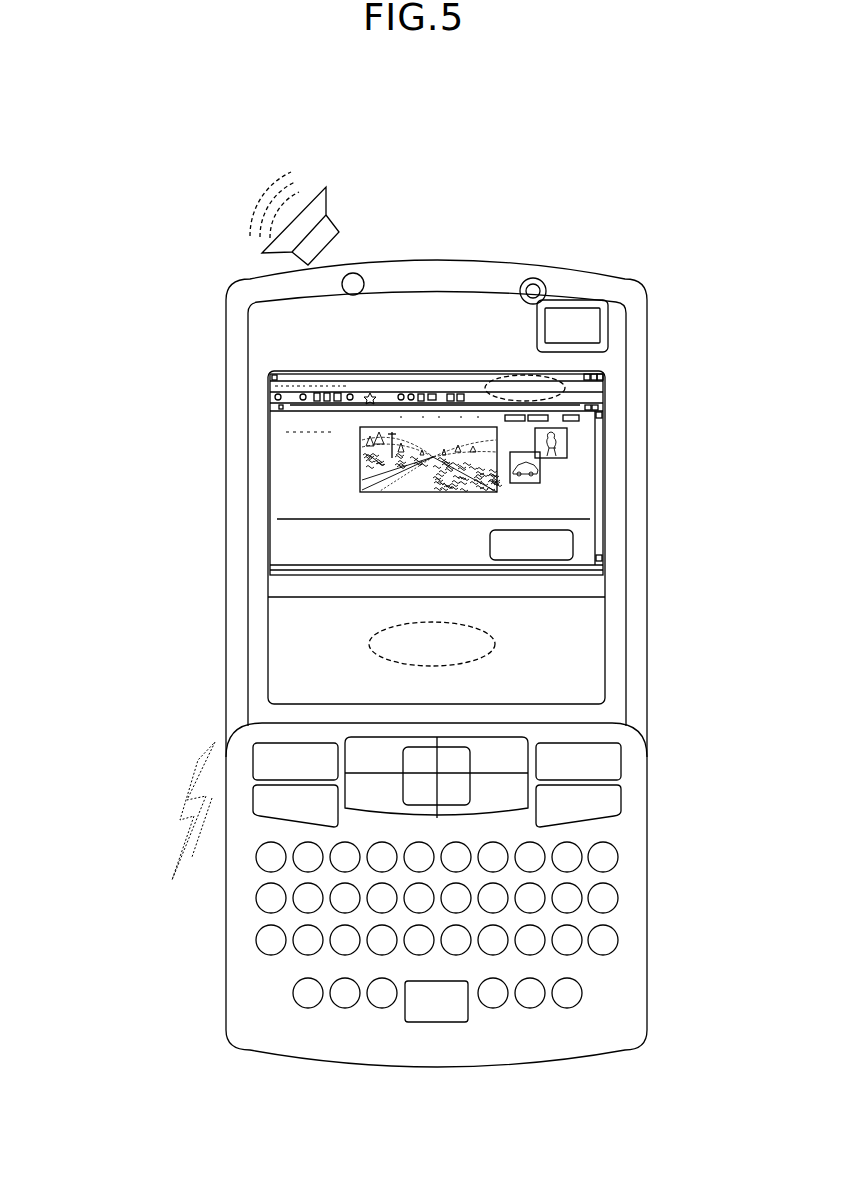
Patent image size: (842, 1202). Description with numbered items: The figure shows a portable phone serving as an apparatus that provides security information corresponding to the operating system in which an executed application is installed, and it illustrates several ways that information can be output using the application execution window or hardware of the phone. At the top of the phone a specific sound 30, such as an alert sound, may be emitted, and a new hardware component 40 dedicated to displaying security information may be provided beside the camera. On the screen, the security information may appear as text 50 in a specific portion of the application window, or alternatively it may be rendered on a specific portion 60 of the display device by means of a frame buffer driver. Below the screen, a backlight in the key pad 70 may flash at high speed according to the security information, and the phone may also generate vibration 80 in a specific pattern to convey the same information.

The specific sound 30 is at (358, 272).
The new hardware component 40 is at (593, 300).
The text 50 is at (572, 385).
The specific portion of a display device 60 is at (607, 651).
The key pad 70 is at (610, 877).
The vibration 80 is at (155, 861).